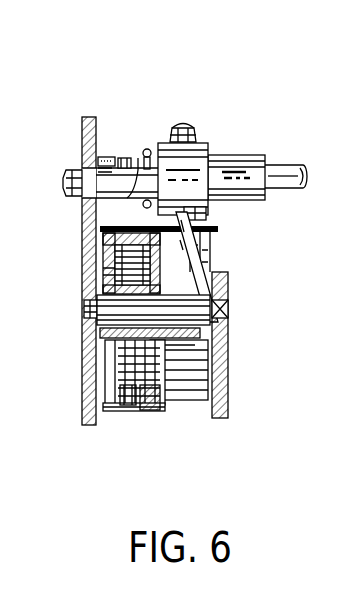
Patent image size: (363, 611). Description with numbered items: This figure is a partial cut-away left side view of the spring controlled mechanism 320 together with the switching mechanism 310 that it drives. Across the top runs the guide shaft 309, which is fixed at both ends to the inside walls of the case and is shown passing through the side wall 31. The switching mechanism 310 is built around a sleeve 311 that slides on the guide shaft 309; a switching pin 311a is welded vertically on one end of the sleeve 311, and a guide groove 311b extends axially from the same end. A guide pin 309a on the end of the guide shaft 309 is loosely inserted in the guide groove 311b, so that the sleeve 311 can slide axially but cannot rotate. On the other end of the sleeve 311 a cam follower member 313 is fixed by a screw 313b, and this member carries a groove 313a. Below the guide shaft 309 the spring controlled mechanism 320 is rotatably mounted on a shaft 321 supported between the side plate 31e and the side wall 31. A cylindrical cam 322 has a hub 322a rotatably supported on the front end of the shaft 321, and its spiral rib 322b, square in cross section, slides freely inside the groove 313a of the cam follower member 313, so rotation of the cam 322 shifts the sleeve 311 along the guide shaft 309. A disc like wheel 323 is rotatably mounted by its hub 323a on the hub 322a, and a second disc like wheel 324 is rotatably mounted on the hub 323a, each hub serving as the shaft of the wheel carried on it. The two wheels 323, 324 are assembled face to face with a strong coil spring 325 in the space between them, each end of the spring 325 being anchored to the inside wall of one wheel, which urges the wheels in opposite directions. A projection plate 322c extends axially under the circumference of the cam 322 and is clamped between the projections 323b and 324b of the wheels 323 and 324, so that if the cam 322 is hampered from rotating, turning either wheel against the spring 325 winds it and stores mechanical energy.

The switching mechanism 310 is at (192, 104).
The guide groove 311b is at (103, 165).
The guide pin 309a is at (122, 158).
The switching pin 311a is at (148, 149).
The screw 313b is at (196, 128).
The cam follower member 313 is at (214, 157).
The sleeve 311 is at (257, 157).
The guide shaft 309 is at (291, 171).
The groove 313a is at (206, 221).
The spiral rib 322b is at (206, 244).
The spring controlled mechanism 320 is at (221, 262).
The disc like wheel 323 is at (96, 216).
The disc like wheel 324 is at (103, 238).
The side wall 31 is at (88, 262).
The coil spring 325 is at (110, 272).
The shaft 321 is at (90, 308).
The hub 322a is at (108, 338).
The hub 323a is at (92, 362).
The projection 324b is at (108, 413).
The projection 323b is at (135, 412).
The projection plate 322c is at (148, 412).
The cylindrical cam 322 is at (180, 413).
The side plate 31e is at (232, 359).